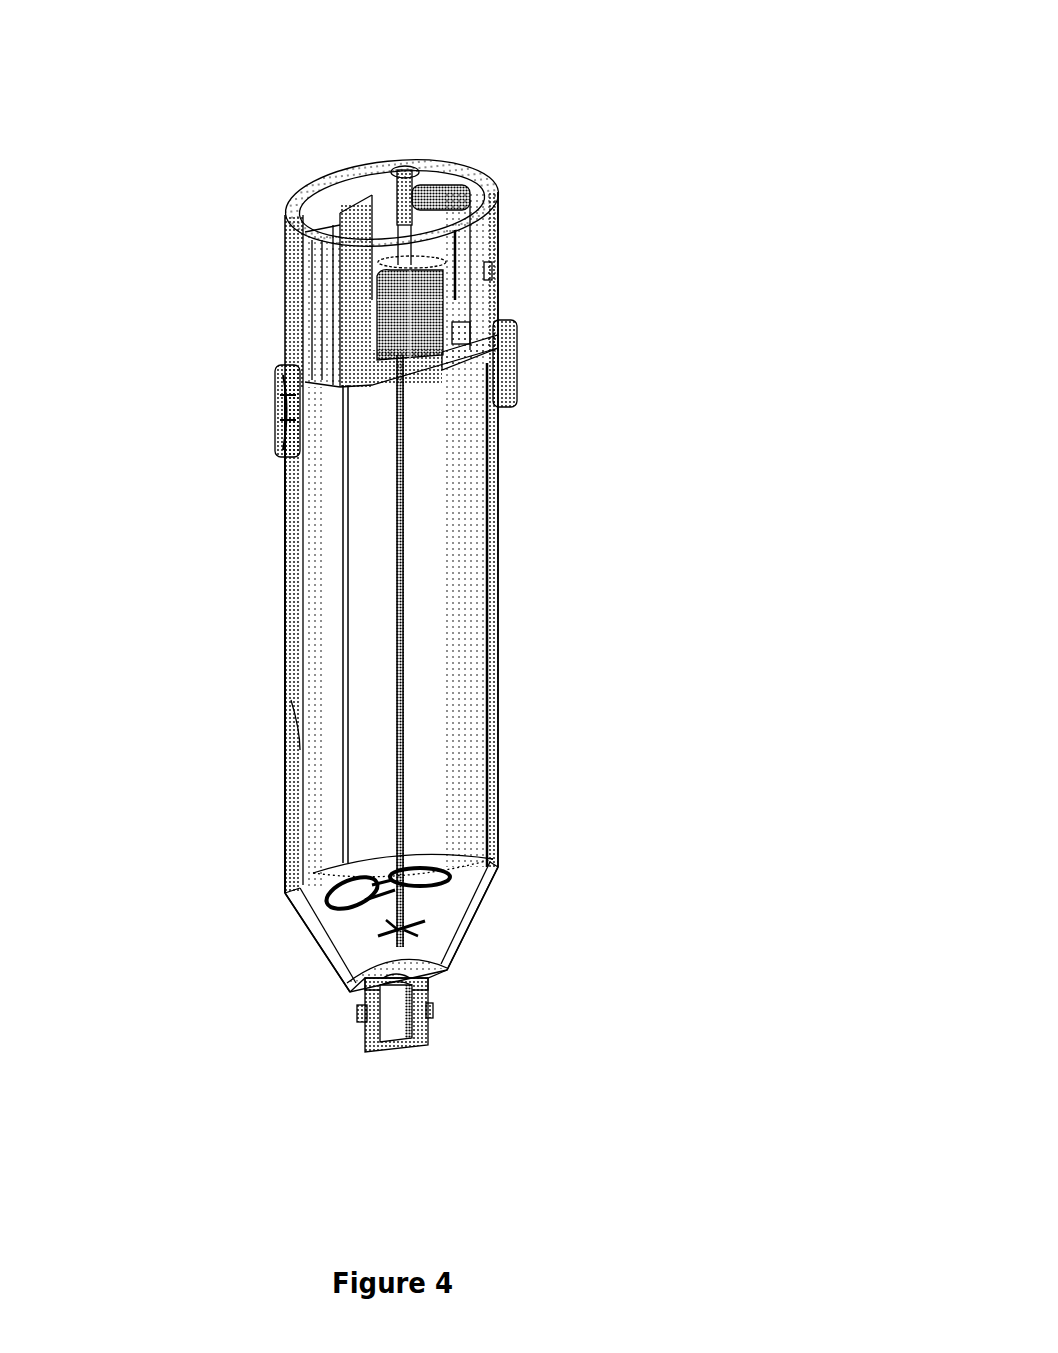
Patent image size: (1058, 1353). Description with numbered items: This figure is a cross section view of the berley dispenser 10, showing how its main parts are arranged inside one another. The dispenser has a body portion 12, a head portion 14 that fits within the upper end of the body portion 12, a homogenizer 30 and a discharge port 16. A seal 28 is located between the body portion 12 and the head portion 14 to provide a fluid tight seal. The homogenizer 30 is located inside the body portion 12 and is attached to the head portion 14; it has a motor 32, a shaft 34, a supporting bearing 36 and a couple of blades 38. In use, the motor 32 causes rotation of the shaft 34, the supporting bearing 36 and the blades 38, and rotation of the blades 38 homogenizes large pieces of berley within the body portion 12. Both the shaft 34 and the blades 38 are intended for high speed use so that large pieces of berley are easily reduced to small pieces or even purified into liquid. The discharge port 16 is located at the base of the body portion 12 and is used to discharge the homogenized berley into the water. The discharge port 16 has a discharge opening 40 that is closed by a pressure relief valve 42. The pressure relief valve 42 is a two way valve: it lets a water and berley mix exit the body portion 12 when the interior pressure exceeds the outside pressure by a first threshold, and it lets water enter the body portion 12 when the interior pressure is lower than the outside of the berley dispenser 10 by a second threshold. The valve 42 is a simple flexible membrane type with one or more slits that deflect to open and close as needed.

The berley dispenser 10 is at (668, 155).
The body portion 12 is at (497, 593).
The head portion 14 is at (287, 267).
The discharge port 16 is at (352, 1058).
The seal 28 is at (287, 460).
The homogenizer 30 is at (435, 740).
The motor 32 is at (447, 293).
The shaft 34 is at (403, 558).
The supporting bearing 36 is at (432, 870).
The blades 38 is at (423, 927).
The discharge opening 40 is at (427, 1042).
The pressure relief valve 42 is at (428, 995).